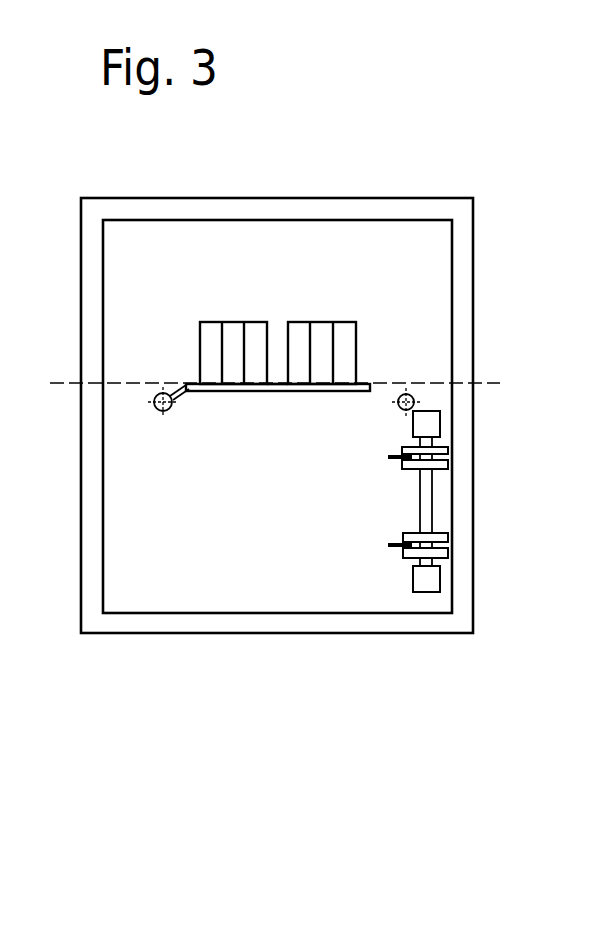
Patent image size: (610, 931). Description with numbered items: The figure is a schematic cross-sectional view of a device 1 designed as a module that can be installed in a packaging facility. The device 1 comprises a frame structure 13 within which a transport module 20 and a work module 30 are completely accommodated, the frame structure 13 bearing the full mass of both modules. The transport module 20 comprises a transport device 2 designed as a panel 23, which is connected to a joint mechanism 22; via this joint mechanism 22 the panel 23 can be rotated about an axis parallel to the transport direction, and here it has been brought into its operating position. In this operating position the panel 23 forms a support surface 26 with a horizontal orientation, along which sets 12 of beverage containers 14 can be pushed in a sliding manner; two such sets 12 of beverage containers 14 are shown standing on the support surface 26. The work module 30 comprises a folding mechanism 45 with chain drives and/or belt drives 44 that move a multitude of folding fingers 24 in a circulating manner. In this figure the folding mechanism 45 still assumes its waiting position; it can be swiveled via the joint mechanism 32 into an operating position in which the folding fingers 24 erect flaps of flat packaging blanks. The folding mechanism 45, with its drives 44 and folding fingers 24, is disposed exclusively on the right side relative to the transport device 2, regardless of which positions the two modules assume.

The device 1 is at (170, 732).
The frame structure 13 is at (415, 205).
The transport module 20 is at (200, 455).
The transport device 2 is at (280, 361).
The panel 23 is at (225, 392).
The sets of beverage containers 12 is at (187, 325).
The beverage containers 14 is at (232, 338).
The support surface 26 is at (278, 376).
The joint mechanism 22 is at (160, 412).
The joint mechanism 32 is at (412, 398).
The work module 30 is at (426, 600).
The chain drives and/or belt drives 44 is at (440, 468).
The folding mechanism 45 is at (378, 458).
The folding fingers 24 is at (402, 556).